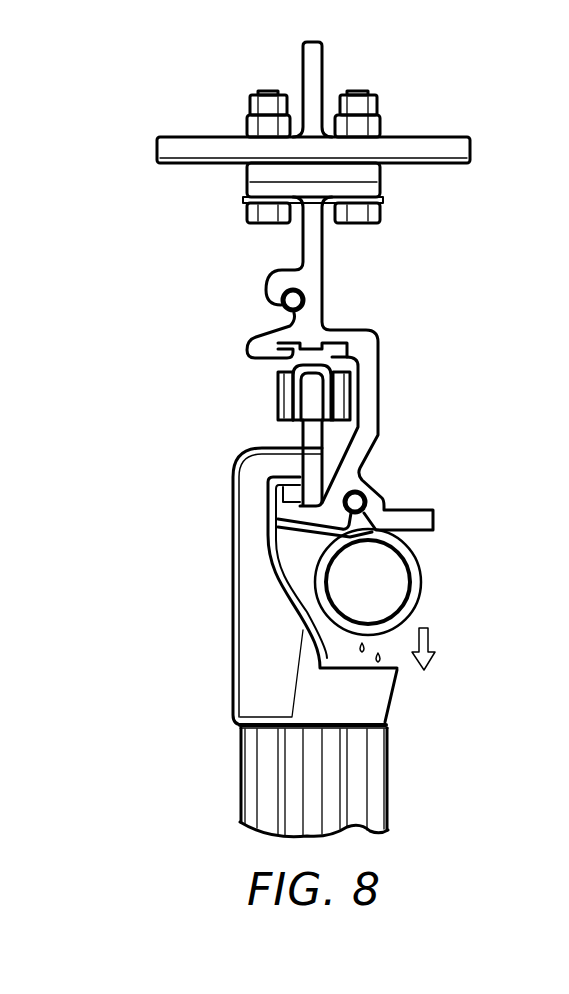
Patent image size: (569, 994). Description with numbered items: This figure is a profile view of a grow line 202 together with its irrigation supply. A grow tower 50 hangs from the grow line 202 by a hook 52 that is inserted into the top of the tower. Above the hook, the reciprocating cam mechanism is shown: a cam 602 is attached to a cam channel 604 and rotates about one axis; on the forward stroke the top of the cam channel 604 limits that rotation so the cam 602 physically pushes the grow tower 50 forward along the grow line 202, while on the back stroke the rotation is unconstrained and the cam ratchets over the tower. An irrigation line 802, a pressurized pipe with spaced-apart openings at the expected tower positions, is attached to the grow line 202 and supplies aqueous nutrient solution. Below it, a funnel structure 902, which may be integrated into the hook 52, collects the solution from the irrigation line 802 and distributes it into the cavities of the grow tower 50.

The grow line 202 is at (382, 355).
The cam channel 604 is at (288, 388).
The cam 602 is at (303, 438).
The hook 52 is at (233, 568).
The irrigation line 802 is at (422, 583).
The funnel structure 902 is at (392, 693).
The grow tower 50 is at (240, 760).